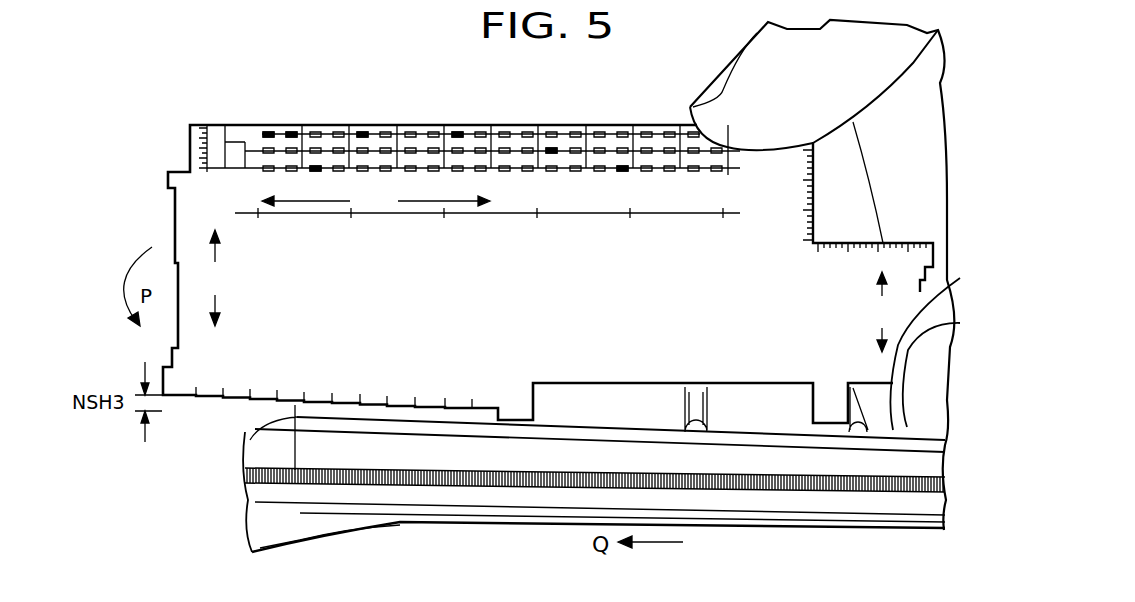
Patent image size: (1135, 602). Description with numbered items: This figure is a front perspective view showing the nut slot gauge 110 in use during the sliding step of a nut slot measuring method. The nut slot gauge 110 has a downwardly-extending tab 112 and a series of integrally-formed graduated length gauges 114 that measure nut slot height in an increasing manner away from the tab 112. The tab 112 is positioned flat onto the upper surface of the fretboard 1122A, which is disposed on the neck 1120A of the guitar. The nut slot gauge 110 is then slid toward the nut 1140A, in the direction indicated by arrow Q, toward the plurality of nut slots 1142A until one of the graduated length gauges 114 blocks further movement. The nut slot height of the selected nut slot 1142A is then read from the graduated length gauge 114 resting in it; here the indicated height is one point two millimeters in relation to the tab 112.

The nut slot gauge 110 is at (296, 320).
The downwardly-extending tab 112 is at (513, 422).
The graduated length gauges 114 is at (375, 412).
The neck 1120A is at (832, 500).
The fretboard 1122A is at (577, 457).
The nut 1140A is at (263, 460).
The nut slots 1142A is at (268, 405).